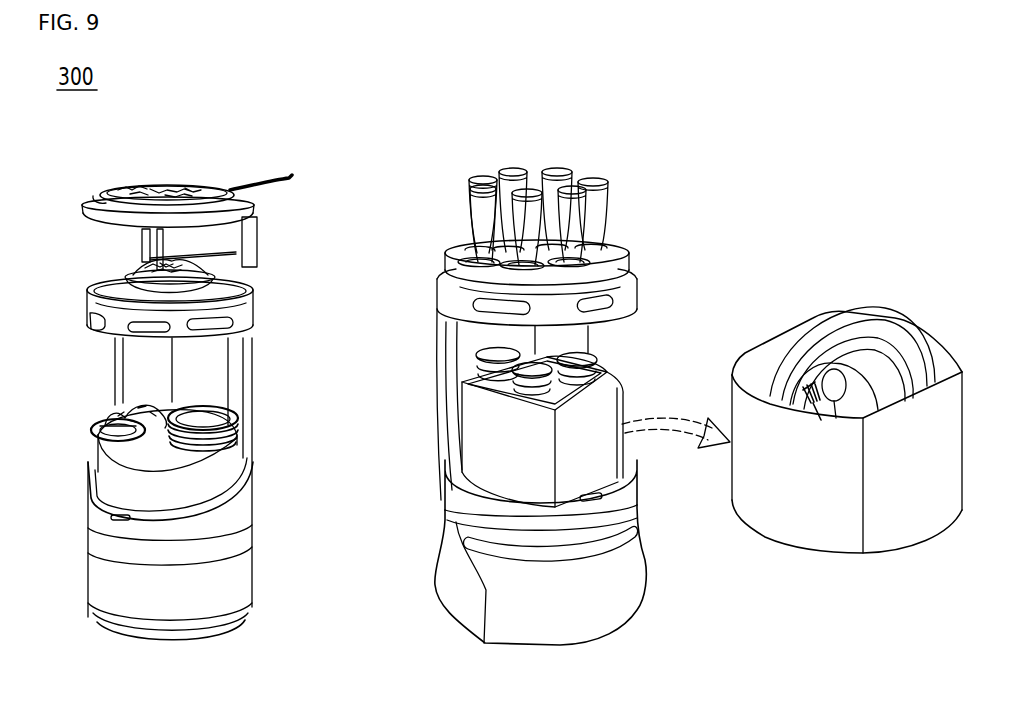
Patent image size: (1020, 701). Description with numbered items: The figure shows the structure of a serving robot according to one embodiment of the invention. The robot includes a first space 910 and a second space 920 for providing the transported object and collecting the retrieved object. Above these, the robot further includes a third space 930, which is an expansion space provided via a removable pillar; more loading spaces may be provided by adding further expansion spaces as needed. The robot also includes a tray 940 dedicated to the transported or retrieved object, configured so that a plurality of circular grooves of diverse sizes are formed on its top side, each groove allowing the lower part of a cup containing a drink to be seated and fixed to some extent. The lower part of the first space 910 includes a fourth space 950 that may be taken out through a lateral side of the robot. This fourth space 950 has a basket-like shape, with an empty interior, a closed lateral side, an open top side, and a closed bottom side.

The first space 910 is at (232, 456).
The second space 920 is at (243, 317).
The third space 930 is at (243, 213).
The tray 940 is at (455, 263).
The fourth space 950 is at (482, 440).